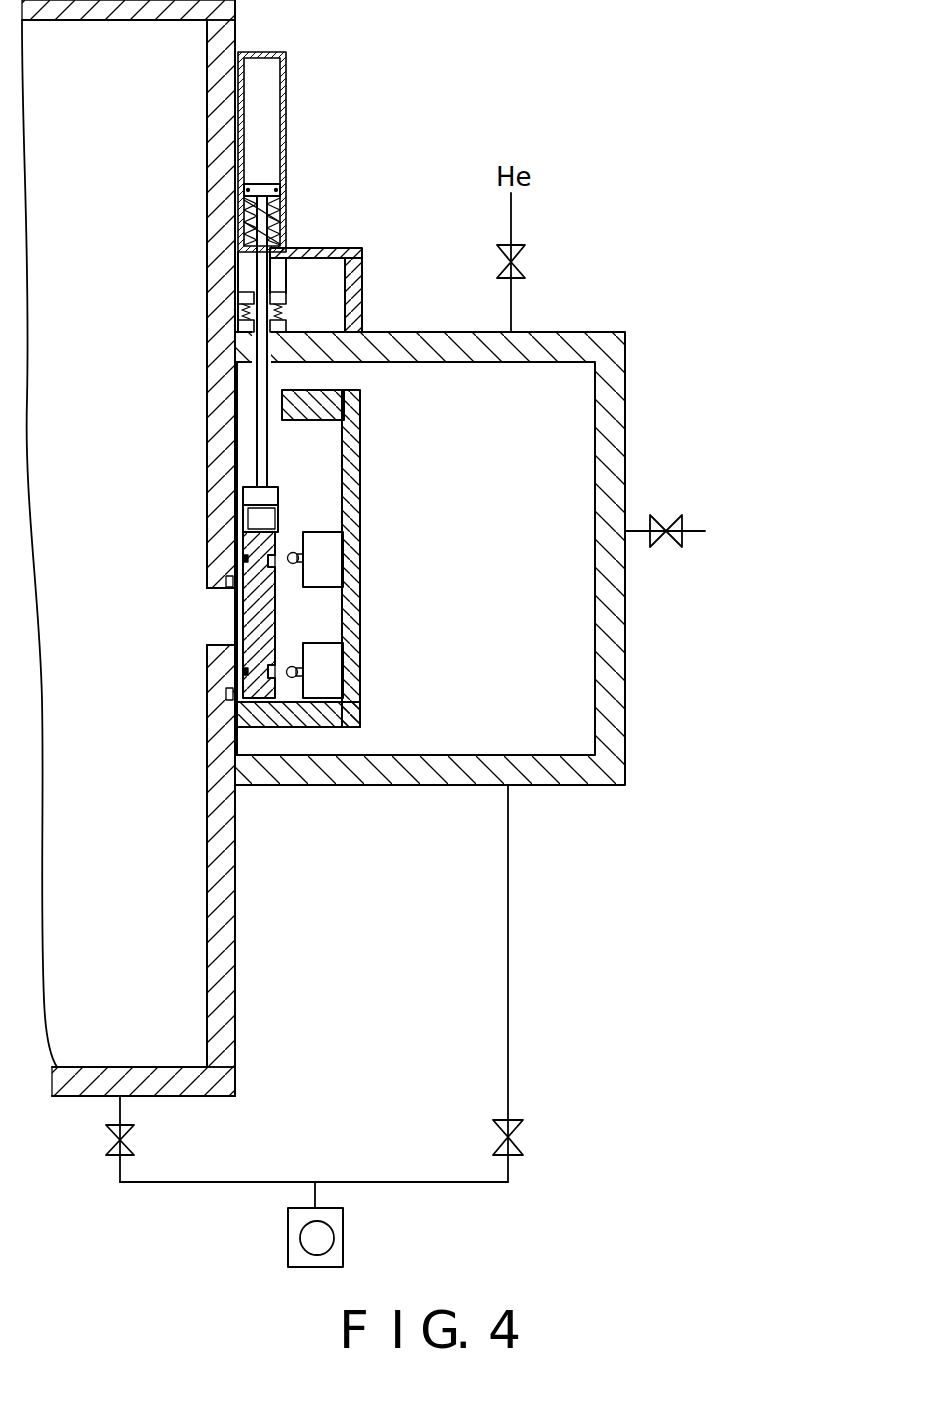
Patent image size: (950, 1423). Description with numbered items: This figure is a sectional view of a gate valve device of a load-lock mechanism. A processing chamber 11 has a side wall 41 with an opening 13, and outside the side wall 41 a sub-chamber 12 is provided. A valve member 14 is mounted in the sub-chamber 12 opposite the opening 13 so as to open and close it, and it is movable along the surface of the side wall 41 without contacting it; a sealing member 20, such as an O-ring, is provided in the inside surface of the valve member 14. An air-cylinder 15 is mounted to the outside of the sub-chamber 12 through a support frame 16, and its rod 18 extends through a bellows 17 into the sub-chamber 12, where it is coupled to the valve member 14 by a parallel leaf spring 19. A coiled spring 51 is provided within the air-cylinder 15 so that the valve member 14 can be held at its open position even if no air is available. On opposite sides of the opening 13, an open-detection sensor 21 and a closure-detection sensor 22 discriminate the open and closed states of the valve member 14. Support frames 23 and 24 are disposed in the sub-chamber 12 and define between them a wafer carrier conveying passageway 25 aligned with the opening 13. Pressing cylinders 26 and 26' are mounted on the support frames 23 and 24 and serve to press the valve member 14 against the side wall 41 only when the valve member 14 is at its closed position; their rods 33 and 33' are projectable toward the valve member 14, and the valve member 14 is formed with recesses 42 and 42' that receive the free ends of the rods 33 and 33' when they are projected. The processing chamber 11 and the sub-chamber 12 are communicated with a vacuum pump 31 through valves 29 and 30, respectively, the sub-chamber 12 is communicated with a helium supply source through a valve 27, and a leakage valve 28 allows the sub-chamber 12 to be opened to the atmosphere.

The processing chamber 11 is at (190, 1098).
The sub-chamber 12 is at (598, 780).
The opening 13 is at (215, 628).
The valve member 14 is at (277, 626).
The air-cylinder 15 is at (288, 116).
The support frame 16 is at (363, 258).
The bellows 17 is at (275, 296).
The rod 18 is at (264, 383).
The parallel leaf spring 19 is at (272, 497).
The sealing member 20 is at (246, 560).
The open-detection sensor 21 is at (228, 581).
The closure-detection sensor 22 is at (228, 694).
The support frame 23 is at (352, 452).
The support frame 24 is at (354, 690).
The wafer carrier conveying passageway 25 is at (345, 602).
The pressing cylinder 26 is at (366, 546).
The pressing cylinder 26' is at (369, 670).
The valve 27 is at (526, 260).
The leakage valve 28 is at (672, 522).
The valve 29 is at (108, 1136).
The valve 30 is at (524, 1130).
The vacuum pump 31 is at (345, 1222).
The pressing rod 33 is at (358, 555).
The pressing rod 33' is at (362, 646).
The side wall 41 is at (222, 870).
The recess 42 is at (298, 525).
The recess 42' is at (283, 752).
The coiled spring 51 is at (281, 212).